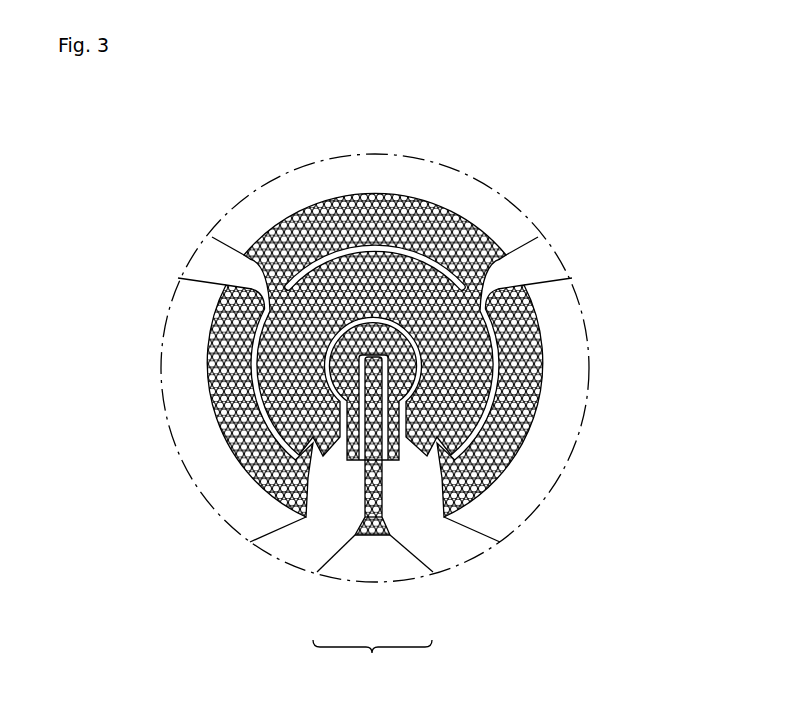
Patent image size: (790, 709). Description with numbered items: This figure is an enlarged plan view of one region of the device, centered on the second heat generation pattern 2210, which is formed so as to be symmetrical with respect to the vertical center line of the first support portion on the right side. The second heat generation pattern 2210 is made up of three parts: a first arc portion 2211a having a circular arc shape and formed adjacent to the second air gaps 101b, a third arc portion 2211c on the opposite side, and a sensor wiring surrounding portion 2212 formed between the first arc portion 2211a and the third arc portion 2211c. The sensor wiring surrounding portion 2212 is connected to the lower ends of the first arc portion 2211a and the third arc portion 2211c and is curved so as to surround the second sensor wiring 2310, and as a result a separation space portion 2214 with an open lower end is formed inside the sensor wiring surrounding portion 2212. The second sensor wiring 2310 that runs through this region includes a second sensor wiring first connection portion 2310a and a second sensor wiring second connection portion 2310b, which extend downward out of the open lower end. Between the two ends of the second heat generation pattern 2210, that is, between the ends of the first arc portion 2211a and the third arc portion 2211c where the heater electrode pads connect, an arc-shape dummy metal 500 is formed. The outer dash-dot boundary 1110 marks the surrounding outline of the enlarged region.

The arc-shape dummy metal 500 is at (345, 250).
The separation space portion 2214 is at (371, 348).
The second heat generation pattern 2210 is at (500, 336).
The second air gaps 101b is at (568, 380).
The outer peripheral surface 1110 is at (537, 417).
The first arc portion 2211a is at (255, 398).
The third arc portion 2211c is at (470, 437).
The sensor wiring surrounding portion 2212 is at (345, 425).
The second sensor wiring first connection portion 2310a is at (360, 445).
The second sensor wiring second connection portion 2310b is at (388, 443).
The second sensor wiring 2310 is at (372, 659).